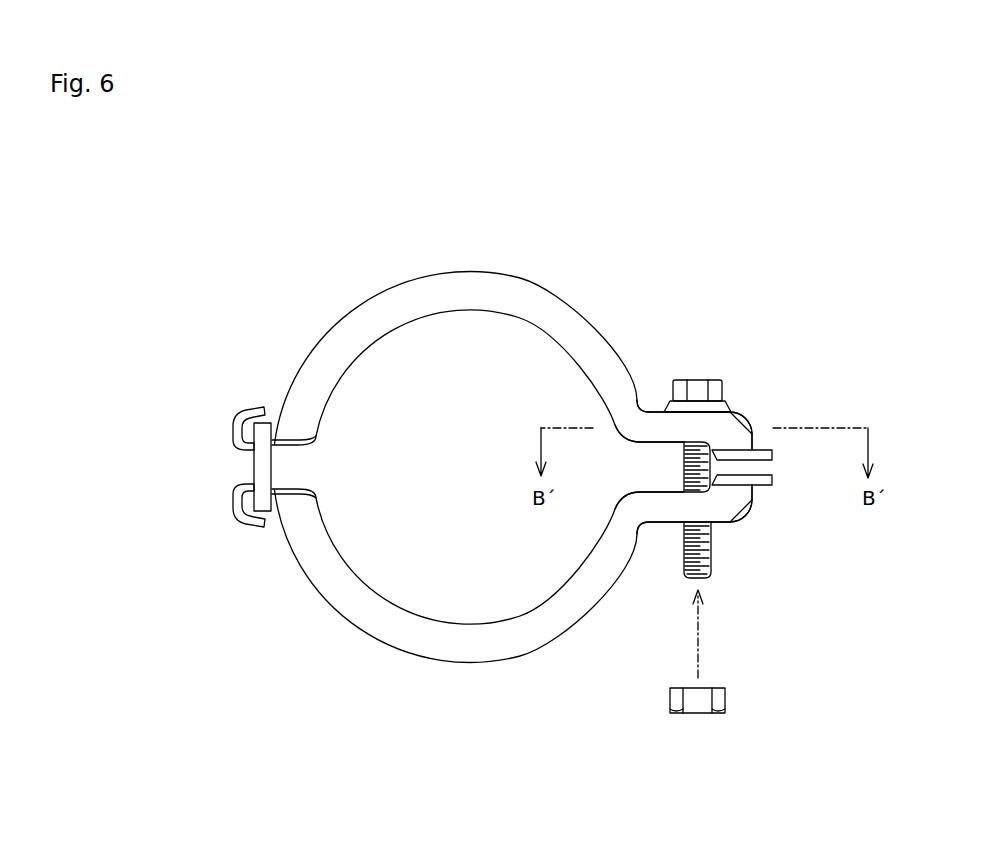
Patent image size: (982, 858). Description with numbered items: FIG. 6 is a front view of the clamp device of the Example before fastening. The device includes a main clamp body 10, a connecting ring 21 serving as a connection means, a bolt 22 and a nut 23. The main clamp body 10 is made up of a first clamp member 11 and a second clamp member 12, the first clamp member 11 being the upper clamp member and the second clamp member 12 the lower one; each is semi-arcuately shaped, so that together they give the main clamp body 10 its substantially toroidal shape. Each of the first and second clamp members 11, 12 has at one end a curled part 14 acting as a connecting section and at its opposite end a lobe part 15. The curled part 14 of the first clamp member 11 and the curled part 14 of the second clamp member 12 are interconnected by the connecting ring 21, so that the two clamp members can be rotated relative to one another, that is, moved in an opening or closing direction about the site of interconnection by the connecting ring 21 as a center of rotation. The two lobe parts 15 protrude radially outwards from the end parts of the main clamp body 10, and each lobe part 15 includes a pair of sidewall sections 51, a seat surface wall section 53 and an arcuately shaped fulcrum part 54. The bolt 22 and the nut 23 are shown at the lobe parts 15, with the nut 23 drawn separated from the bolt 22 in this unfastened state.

The main clamp body 10 is at (512, 470).
The first clamp member 11 is at (465, 270).
The second clamp member 12 is at (462, 665).
The curled part 14 is at (237, 415).
The lobe part 15 is at (748, 427).
The connecting ring 21 is at (263, 468).
The bolt 22 is at (695, 380).
The nut 23 is at (718, 702).
The sidewall section 51 is at (705, 425).
The seat surface wall section 53 is at (652, 412).
The fulcrum part 54 is at (767, 442).